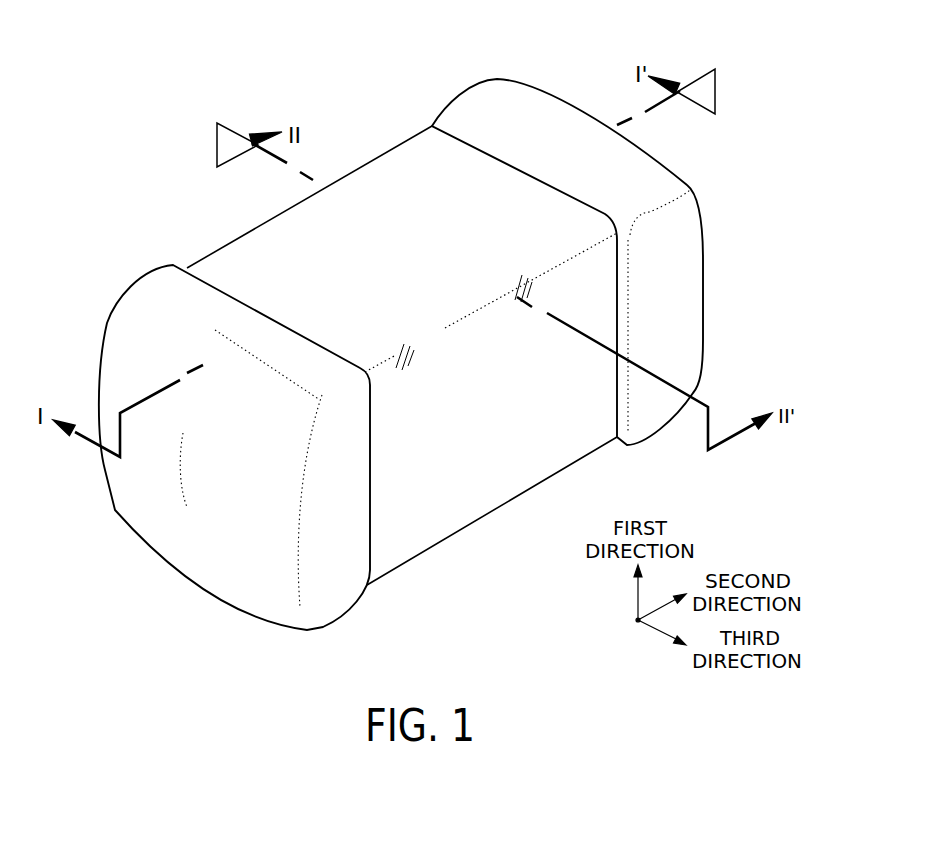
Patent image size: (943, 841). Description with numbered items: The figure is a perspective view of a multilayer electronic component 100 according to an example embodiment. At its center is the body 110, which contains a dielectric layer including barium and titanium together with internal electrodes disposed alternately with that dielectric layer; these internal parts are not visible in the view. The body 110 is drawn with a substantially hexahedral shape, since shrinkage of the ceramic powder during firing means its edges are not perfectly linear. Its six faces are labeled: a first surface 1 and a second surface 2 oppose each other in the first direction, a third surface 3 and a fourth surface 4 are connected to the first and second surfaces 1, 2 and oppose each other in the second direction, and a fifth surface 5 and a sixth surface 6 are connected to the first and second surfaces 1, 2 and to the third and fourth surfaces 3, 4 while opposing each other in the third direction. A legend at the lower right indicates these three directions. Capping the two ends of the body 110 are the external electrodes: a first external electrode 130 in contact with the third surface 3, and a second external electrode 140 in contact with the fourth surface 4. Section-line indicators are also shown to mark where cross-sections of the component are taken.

The multilayer electronic component 100 is at (284, 22).
The body 110 is at (370, 174).
The first external electrode 130 is at (152, 268).
The second external electrode 140 is at (476, 85).
The first surface 1 is at (438, 554).
The second surface 2 is at (419, 147).
The third surface 3 is at (138, 512).
The fourth surface 4 is at (549, 103).
The fifth surface 5 is at (200, 250).
The sixth surface 6 is at (549, 462).